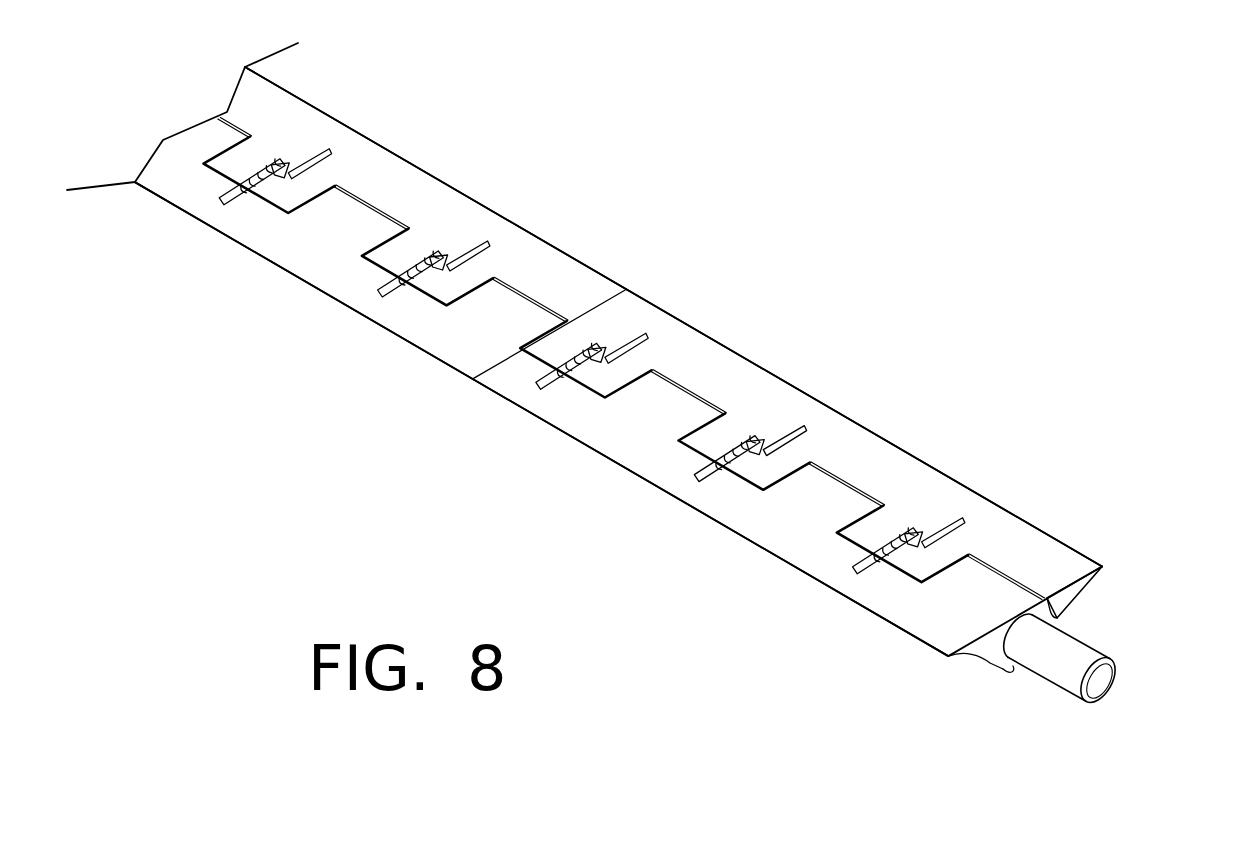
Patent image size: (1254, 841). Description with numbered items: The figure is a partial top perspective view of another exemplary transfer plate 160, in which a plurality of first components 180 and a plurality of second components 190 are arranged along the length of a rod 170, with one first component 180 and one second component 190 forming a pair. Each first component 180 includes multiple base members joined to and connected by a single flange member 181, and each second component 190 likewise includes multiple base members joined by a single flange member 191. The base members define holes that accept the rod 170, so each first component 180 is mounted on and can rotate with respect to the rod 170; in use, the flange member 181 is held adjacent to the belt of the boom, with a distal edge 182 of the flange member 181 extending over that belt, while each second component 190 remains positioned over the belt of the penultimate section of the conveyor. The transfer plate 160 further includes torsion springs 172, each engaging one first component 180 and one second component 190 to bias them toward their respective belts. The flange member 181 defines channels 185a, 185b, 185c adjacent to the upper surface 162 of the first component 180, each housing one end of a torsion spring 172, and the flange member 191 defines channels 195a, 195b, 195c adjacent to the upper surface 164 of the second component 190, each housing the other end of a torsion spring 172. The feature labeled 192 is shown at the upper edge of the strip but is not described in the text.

The transfer plate 160 is at (951, 256).
The upper surface 162 is at (802, 516).
The upper surface 164 is at (850, 471).
The rod 170 is at (1100, 685).
The torsion spring 172 is at (271, 160).
The first component 180 is at (300, 279).
The flange member 181 is at (982, 662).
The distal edge 182 is at (943, 660).
The channel 185a is at (876, 574).
The channel 185b is at (717, 480).
The channel 185c is at (557, 390).
The second component 190 is at (408, 159).
The flange member 191 is at (1082, 596).
The upper edge of strip 192 is at (1079, 550).
The channel 195a is at (953, 534).
The channel 195b is at (793, 442).
The channel 195c is at (633, 350).